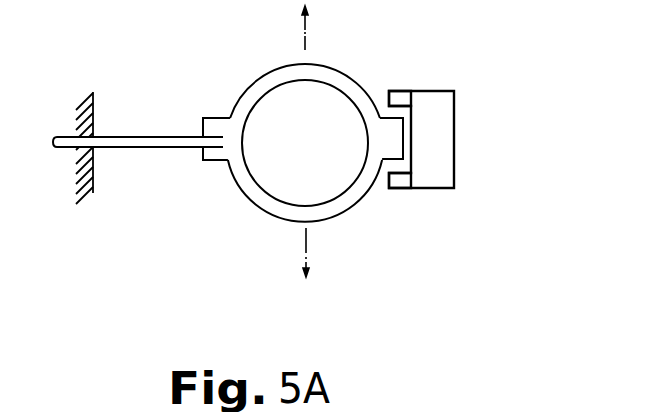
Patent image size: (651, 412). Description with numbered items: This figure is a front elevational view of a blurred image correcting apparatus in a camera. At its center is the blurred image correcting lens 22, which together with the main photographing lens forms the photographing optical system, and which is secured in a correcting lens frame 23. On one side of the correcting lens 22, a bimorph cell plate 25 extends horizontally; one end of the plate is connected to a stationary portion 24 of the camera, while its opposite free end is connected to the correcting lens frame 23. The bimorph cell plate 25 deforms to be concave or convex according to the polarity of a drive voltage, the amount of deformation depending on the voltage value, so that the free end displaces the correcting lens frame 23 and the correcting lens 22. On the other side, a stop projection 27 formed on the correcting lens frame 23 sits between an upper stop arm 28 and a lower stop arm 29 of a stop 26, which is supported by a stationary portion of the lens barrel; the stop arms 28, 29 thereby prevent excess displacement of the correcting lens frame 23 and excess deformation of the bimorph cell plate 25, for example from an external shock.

The blurred image correcting lens 22 is at (273, 103).
The correcting lens frame 23 is at (348, 82).
The stationary portion 24 is at (94, 172).
The bimorph cell plate 25 is at (147, 137).
The stop 26 is at (442, 165).
The stop projection 27 is at (393, 138).
The upper stop arm 28 is at (402, 95).
The lower stop arm 29 is at (397, 188).